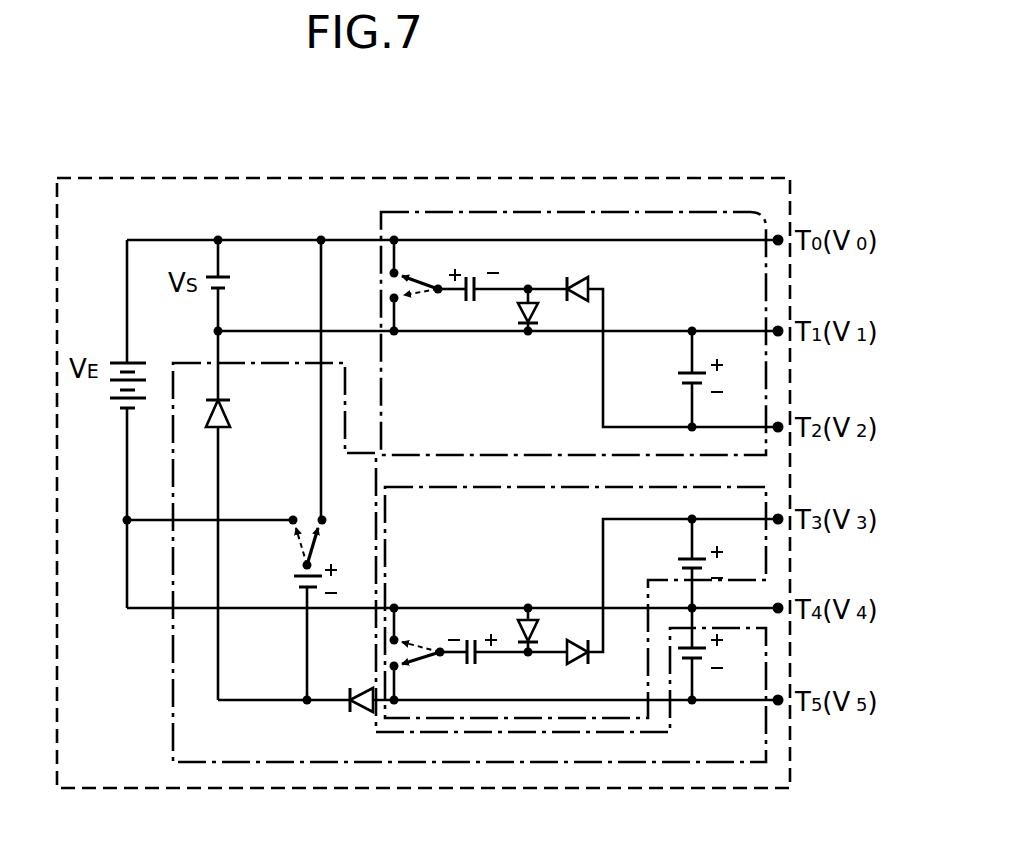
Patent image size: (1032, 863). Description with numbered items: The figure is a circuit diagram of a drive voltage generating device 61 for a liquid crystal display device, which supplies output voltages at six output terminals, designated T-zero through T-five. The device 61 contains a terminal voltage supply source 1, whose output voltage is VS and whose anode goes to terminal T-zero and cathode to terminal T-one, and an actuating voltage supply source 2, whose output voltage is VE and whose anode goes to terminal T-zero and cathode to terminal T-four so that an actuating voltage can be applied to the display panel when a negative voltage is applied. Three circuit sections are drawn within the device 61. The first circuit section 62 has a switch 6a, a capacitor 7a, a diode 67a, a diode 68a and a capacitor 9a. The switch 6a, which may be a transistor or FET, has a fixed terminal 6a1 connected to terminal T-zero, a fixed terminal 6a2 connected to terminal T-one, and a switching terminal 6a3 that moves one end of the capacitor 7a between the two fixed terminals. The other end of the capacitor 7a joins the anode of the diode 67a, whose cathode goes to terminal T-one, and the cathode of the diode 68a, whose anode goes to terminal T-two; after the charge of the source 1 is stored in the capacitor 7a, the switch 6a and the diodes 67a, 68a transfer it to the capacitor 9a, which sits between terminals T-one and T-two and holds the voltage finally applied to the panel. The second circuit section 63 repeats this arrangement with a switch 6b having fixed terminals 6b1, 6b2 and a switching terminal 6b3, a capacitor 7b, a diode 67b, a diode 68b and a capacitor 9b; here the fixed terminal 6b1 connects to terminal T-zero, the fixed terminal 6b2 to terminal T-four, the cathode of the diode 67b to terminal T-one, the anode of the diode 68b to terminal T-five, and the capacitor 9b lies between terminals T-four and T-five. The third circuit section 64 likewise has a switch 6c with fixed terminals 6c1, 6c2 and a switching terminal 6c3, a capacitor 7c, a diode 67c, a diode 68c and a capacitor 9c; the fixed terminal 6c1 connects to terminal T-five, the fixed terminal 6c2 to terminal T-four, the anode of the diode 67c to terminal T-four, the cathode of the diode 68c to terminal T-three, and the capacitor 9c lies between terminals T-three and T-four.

The drive voltage generating device 61 is at (689, 176).
The first circuit section 62 is at (768, 210).
The second circuit section 63 is at (173, 695).
The third circuit section 64 is at (736, 486).
The terminal voltage supply source 1 is at (232, 284).
The actuating voltage supply source 2 is at (100, 390).
The switch 6a is at (406, 306).
The fixed terminal 6a1 is at (392, 271).
The fixed terminal 6a2 is at (400, 303).
The switching terminal 6a3 is at (440, 292).
The capacitor 7a is at (485, 268).
The diode 67a is at (541, 312).
The diode 68a is at (585, 286).
The capacitor 9a is at (680, 378).
The diode 67b is at (228, 413).
The switch 6b is at (299, 512).
The fixed terminal 6b1 is at (323, 519).
The fixed terminal 6b2 is at (292, 518).
The switching terminal 6b3 is at (268, 550).
The capacitor 7b is at (290, 584).
The diode 68b is at (358, 715).
The capacitor 9b is at (706, 655).
The switch 6c is at (423, 600).
The fixed terminal 6c1 is at (392, 664).
The fixed terminal 6c2 is at (396, 638).
The switching terminal 6c3 is at (441, 656).
The capacitor 7c is at (468, 638).
The diode 67c is at (538, 610).
The diode 68c is at (582, 645).
The capacitor 9c is at (678, 565).